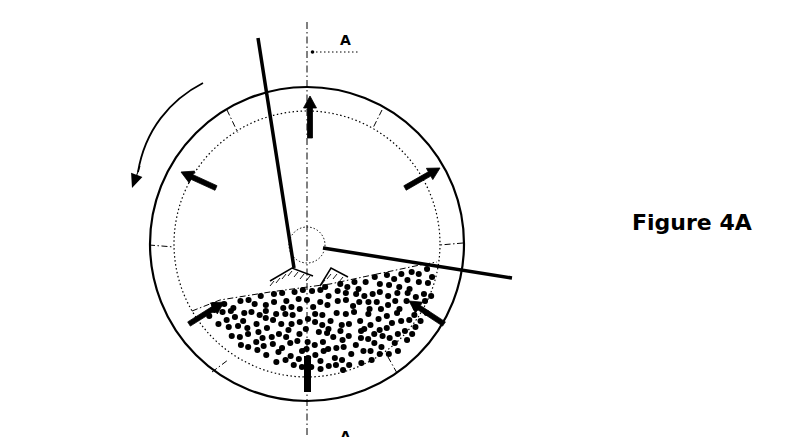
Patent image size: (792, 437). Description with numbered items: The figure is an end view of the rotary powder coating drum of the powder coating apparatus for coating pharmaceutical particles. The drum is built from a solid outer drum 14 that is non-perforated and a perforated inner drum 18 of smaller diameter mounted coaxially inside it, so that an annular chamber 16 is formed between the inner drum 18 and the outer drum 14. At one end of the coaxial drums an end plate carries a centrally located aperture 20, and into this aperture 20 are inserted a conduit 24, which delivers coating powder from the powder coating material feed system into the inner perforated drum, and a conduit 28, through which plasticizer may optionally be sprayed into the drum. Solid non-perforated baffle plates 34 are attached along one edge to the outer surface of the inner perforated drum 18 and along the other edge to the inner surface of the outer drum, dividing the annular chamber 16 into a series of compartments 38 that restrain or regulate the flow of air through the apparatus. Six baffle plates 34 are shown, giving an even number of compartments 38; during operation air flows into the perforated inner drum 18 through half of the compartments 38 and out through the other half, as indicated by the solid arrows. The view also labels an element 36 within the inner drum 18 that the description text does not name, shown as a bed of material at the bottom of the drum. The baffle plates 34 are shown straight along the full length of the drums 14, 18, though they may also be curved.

The solid outer drum 14 is at (152, 203).
The chamber 16 is at (422, 140).
The perforated inner drum 18 is at (394, 152).
The aperture 20 is at (330, 228).
The conduit 24 is at (258, 60).
The conduit 28 is at (500, 272).
The baffle plates 34 is at (236, 106).
The granular material bed 36 is at (410, 330).
The compartments 38 is at (441, 150).